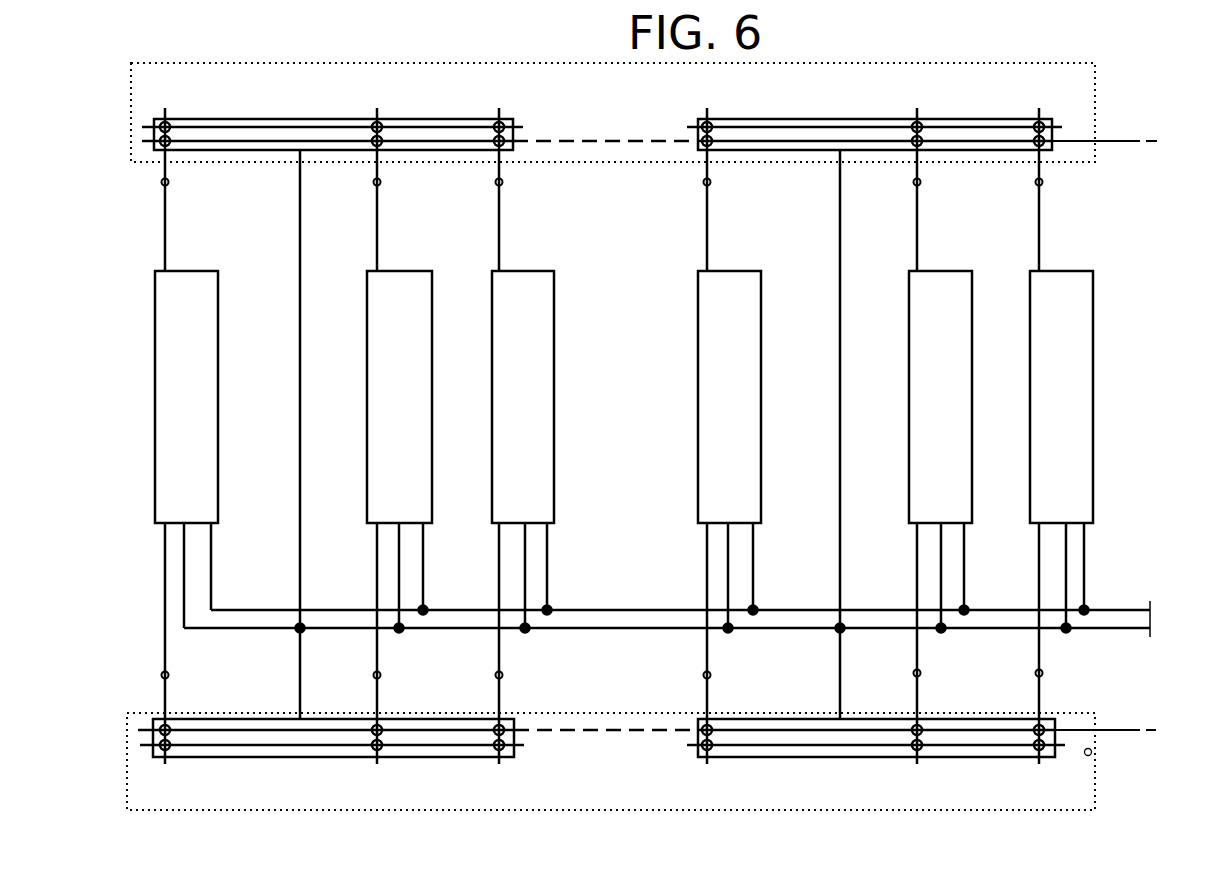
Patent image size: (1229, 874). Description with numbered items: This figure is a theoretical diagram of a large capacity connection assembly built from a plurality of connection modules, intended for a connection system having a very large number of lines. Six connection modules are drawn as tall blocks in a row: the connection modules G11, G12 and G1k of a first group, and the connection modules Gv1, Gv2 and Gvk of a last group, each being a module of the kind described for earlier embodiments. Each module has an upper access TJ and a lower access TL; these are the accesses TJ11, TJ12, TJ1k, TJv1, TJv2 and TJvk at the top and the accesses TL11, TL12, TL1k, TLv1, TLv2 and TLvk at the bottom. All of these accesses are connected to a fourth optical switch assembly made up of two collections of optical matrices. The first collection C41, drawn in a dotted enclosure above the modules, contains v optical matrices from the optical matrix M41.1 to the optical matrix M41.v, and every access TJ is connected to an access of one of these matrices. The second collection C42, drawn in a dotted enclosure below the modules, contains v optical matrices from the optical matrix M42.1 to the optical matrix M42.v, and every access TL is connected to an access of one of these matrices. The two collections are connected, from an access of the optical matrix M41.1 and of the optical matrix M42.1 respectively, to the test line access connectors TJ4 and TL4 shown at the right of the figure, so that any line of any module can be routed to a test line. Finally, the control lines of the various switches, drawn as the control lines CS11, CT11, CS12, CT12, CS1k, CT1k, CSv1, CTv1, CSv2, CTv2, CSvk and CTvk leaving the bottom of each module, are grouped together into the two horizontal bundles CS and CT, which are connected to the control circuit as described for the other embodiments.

The first collection of optical matrices C41 is at (1093, 113).
The second collection of optical matrices C42 is at (1093, 756).
The optical matrix M41.v is at (292, 118).
The optical matrix M41.1 is at (833, 115).
The optical matrix M42.v is at (283, 753).
The optical matrix M42.1 is at (826, 750).
The test line access connector TJ4 is at (1132, 142).
The test line access connector TL4 is at (1156, 729).
The access TJ of connection module TJvk is at (170, 186).
The access TJ of connection module TJv2 is at (381, 186).
The access TJ of connection module TJv1 is at (503, 186).
The access TJ of connection module TJ1k is at (711, 186).
The access TJ of connection module TJ12 is at (921, 186).
The access TJ of connection module TJ11 is at (1043, 186).
The connection module Gvk is at (207, 334).
The connection module Gv2 is at (372, 313).
The connection module Gv1 is at (553, 328).
The connection module G1k is at (748, 330).
The connection module G12 is at (917, 310).
The connection module G11 is at (1083, 330).
The control line bundle CS is at (1157, 605).
The control line bundle CT is at (1155, 633).
The control line CSvk is at (211, 561).
The control line CTvk is at (185, 593).
The control line CSv2 is at (423, 560).
The control line CTv2 is at (399, 572).
The control line CSv1 is at (547, 560).
The control line CTv1 is at (526, 590).
The control line CS1k is at (753, 560).
The control line CT1k is at (729, 590).
The control line CS12 is at (964, 560).
The control line CT12 is at (941, 560).
The control line CS11 is at (1084, 558).
The control line CT11 is at (1067, 587).
The access TL of connection module TLvk is at (168, 675).
The access TL of connection module TLv2 is at (380, 675).
The access TL of connection module TLv1 is at (502, 675).
The access TL of connection module TL1k is at (710, 675).
The access TL of connection module TL12 is at (920, 672).
The access TL of connection module TL11 is at (1042, 672).